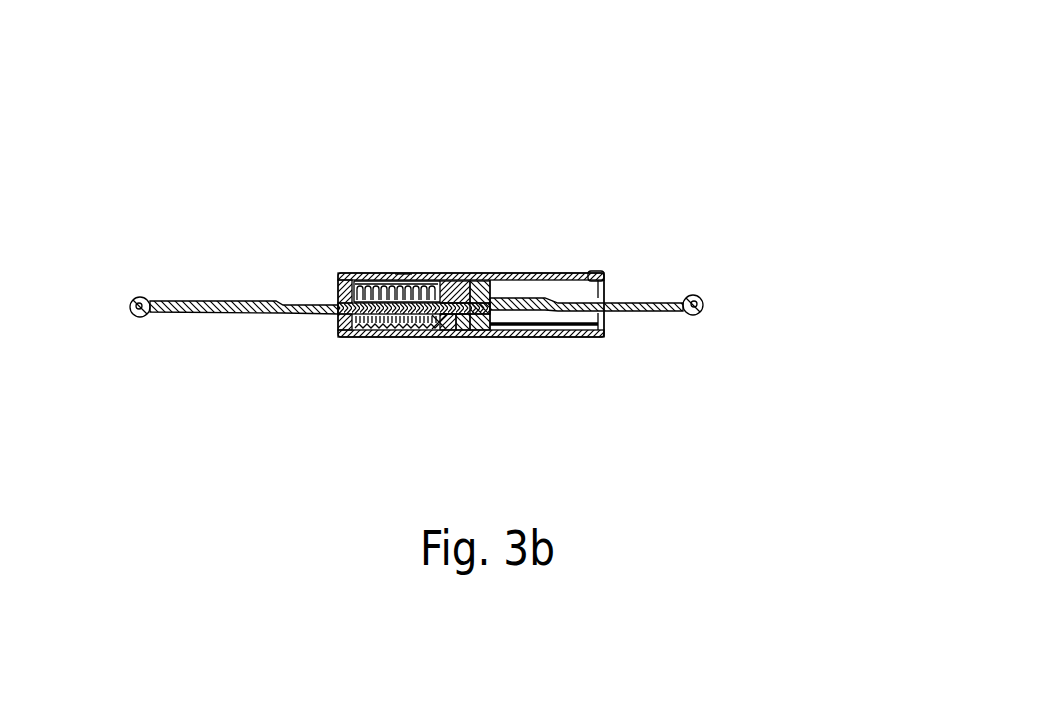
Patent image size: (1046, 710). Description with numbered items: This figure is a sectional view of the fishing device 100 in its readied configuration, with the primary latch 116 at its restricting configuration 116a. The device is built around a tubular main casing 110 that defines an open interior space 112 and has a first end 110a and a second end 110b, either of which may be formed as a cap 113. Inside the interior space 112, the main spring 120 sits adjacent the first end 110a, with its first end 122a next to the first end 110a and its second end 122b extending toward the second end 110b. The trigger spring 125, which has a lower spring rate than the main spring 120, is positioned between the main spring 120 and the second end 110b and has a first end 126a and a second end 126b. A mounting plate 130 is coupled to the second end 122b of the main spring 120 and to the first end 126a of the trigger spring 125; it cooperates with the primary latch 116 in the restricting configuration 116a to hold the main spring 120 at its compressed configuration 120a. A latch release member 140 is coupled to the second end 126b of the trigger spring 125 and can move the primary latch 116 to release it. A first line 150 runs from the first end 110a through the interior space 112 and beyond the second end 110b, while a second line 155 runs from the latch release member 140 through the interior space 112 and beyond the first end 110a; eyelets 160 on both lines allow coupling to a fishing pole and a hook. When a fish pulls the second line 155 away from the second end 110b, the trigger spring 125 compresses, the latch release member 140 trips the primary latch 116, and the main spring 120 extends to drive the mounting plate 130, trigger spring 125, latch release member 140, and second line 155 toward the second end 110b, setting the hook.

The fishing device 100 is at (690, 105).
The main casing 110 is at (599, 345).
The first end of casing 110a is at (334, 277).
The second end of casing 110b is at (605, 282).
The open interior space 112 is at (588, 317).
The cap 113 is at (589, 272).
The primary latch 116 is at (424, 275).
The restricting configuration of primary latch 116a is at (403, 272).
The main spring 120 is at (359, 275).
The compressed configuration of main spring 120a is at (379, 326).
The first end of main spring 122a is at (336, 331).
The second end of main spring 122b is at (436, 326).
The trigger spring 125 is at (455, 290).
The first end of trigger spring 126a is at (448, 329).
The second end of trigger spring 126b is at (496, 334).
The mounting plate 130 is at (441, 327).
The latch release member 140 is at (491, 275).
The first line 150 is at (662, 300).
The second line 155 is at (208, 300).
The eyelets 160 is at (704, 306).